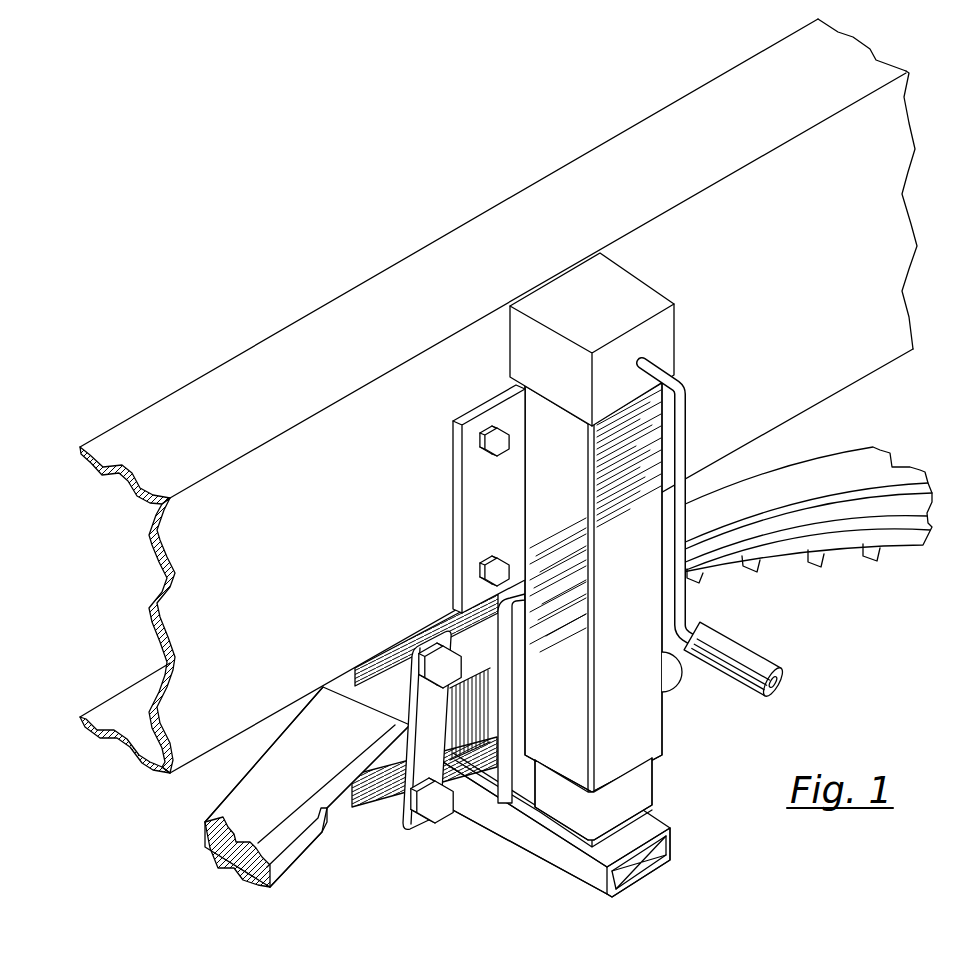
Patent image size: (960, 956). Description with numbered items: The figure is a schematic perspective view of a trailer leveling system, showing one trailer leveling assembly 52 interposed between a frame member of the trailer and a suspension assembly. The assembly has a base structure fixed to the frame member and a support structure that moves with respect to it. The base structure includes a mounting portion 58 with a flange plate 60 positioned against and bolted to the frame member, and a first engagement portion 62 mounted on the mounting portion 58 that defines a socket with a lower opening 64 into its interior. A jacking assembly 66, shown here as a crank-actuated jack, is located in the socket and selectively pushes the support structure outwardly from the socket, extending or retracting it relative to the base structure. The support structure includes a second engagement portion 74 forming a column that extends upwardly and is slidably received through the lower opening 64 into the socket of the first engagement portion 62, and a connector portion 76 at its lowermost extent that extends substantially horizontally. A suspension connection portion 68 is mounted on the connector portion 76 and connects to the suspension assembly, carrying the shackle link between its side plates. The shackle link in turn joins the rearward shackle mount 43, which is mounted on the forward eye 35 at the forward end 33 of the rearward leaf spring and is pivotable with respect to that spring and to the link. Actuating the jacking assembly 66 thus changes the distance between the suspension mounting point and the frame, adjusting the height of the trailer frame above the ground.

The forward end 33 is at (240, 817).
The forward eye 35 is at (403, 648).
The rearward shackle mount 43 is at (422, 763).
The trailer leveling assembly 52 is at (569, 582).
The mounting portion 58 is at (463, 499).
The flange plate 60 is at (463, 499).
The first engagement portion 62 is at (640, 713).
The lower opening 64 is at (640, 770).
The jacking assembly 66 is at (675, 448).
The suspension connection portion 68 is at (493, 762).
The second engagement portion 74 is at (628, 795).
The connector portion 76 is at (566, 857).